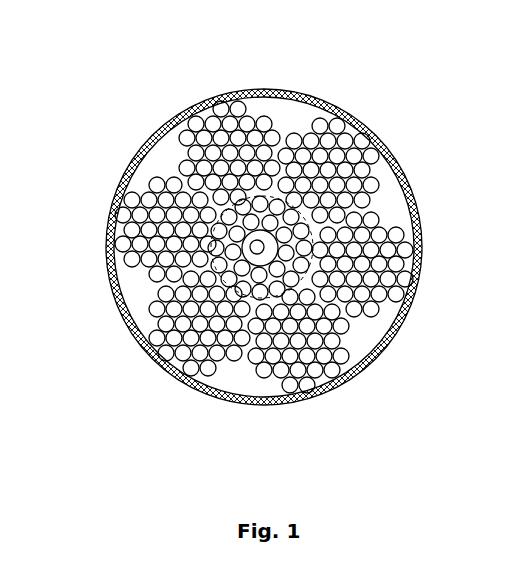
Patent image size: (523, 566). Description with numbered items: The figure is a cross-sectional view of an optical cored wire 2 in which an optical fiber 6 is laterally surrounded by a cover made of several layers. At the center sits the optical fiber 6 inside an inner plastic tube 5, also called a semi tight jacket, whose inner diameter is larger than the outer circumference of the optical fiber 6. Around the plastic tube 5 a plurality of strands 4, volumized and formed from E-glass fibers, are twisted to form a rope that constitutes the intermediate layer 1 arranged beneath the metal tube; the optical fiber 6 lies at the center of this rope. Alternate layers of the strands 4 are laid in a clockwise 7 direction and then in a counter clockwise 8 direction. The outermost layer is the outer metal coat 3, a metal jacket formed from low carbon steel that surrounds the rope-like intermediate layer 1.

The intermediate layer 1 is at (302, 114).
The optical cored wire 2 is at (110, 167).
The outer metal coat 3 is at (368, 128).
The strands 4 is at (376, 218).
The inner plastic tube 5 is at (412, 275).
The optical fiber 6 is at (108, 247).
The clockwise direction 7 is at (148, 348).
The counter clockwise direction 8 is at (198, 124).